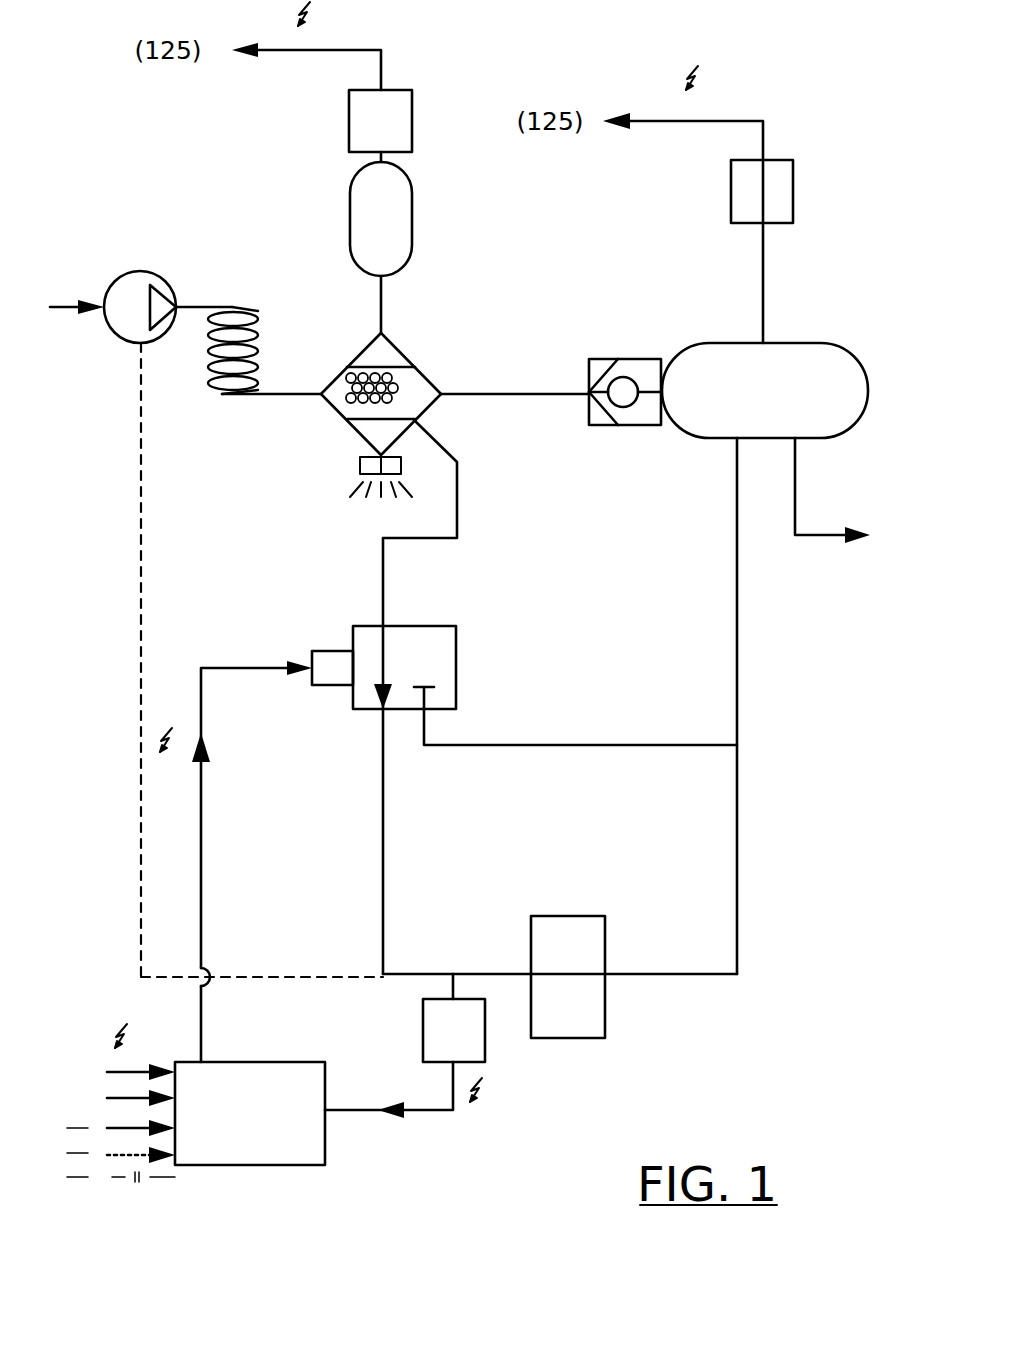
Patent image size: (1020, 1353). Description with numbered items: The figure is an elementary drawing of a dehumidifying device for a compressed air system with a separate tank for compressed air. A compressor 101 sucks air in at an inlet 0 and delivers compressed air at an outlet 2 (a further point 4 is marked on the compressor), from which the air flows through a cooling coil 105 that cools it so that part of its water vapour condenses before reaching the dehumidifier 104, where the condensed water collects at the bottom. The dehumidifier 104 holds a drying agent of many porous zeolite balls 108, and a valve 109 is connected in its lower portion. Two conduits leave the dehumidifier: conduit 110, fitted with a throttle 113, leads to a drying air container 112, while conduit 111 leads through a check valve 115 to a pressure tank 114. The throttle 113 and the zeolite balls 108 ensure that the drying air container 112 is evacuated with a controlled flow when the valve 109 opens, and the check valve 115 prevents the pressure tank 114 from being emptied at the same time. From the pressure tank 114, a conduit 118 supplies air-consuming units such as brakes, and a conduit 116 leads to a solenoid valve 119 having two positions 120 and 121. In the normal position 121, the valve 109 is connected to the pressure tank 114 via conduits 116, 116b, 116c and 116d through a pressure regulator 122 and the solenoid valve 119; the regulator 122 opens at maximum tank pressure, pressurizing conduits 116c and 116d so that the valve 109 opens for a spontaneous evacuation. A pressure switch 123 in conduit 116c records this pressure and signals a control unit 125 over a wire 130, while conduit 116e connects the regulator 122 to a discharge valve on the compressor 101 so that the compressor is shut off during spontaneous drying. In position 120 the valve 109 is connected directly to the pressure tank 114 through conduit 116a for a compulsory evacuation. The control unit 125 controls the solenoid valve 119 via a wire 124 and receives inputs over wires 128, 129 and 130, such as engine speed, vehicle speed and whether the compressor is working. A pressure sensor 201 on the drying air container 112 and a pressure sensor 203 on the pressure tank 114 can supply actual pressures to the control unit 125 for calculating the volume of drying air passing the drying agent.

The inlet 0 is at (56, 294).
The outlet 2 is at (196, 288).
The pump control point 4 is at (156, 357).
The compressor 101 is at (121, 282).
The cooling coil 105 is at (235, 300).
The pressure sensor 201 is at (402, 108).
The drying air container 112 is at (397, 210).
The conduit 110 is at (387, 292).
The throttle 113 is at (384, 326).
The dehumidifier 104 is at (420, 384).
The zeolite balls 108 is at (345, 390).
The valve 109 is at (358, 465).
The conduit 111 is at (510, 398).
The check valve 115 is at (606, 360).
The pressure tank 114 is at (790, 345).
The pressure sensor 203 is at (792, 206).
The conduit 118 is at (815, 540).
The conduit 116 is at (739, 632).
The conduit 116a is at (638, 743).
The conduit 116b is at (739, 832).
The conduit 116c is at (435, 972).
The conduit 116d is at (380, 590).
The conduit 116e is at (140, 650).
The solenoid valve 119 is at (442, 648).
The position 120 is at (432, 700).
The position 121 is at (373, 693).
The wire 124 is at (204, 830).
The pressure regulator 122 is at (582, 1004).
The pressure switch 123 is at (432, 1020).
The wire 130 is at (424, 1108).
The control unit 125 is at (293, 1150).
The wire 128 is at (75, 1072).
The wire 129 is at (75, 1098).